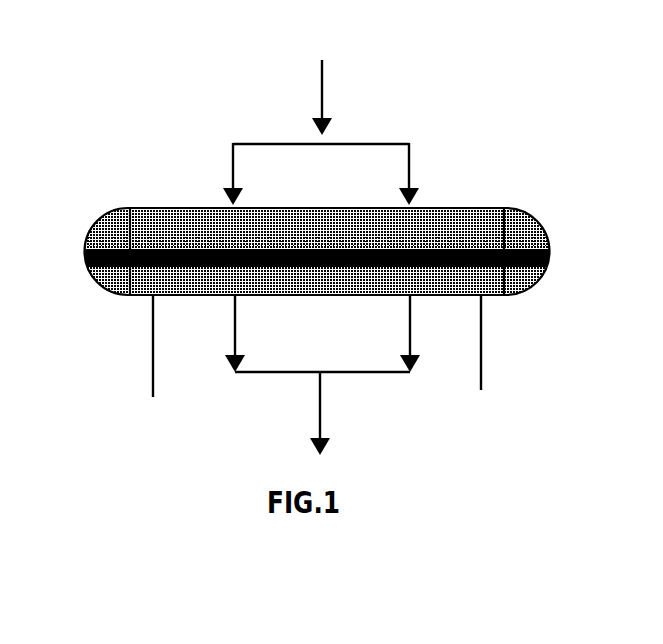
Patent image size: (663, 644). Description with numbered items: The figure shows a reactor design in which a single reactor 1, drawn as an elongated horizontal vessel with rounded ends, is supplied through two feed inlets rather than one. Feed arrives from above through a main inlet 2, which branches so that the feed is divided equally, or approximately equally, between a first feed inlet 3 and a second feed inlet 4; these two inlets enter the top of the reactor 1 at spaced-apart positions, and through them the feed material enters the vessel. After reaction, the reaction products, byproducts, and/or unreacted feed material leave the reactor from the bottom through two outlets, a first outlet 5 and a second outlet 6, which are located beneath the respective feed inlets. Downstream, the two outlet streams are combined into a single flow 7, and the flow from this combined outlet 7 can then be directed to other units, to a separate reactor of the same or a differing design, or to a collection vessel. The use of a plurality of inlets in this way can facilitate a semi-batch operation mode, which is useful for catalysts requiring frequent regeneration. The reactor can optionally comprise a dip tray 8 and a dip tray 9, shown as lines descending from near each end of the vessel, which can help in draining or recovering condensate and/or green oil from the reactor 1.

The reactor 1 is at (301, 252).
The main inlet 2 is at (321, 102).
The feed inlet 3 is at (218, 174).
The feed inlet 4 is at (423, 174).
The outlet 5 is at (217, 333).
The outlet 6 is at (426, 333).
The single flow 7 is at (322, 413).
The dip tray 8 is at (135, 355).
The dip tray 9 is at (496, 355).